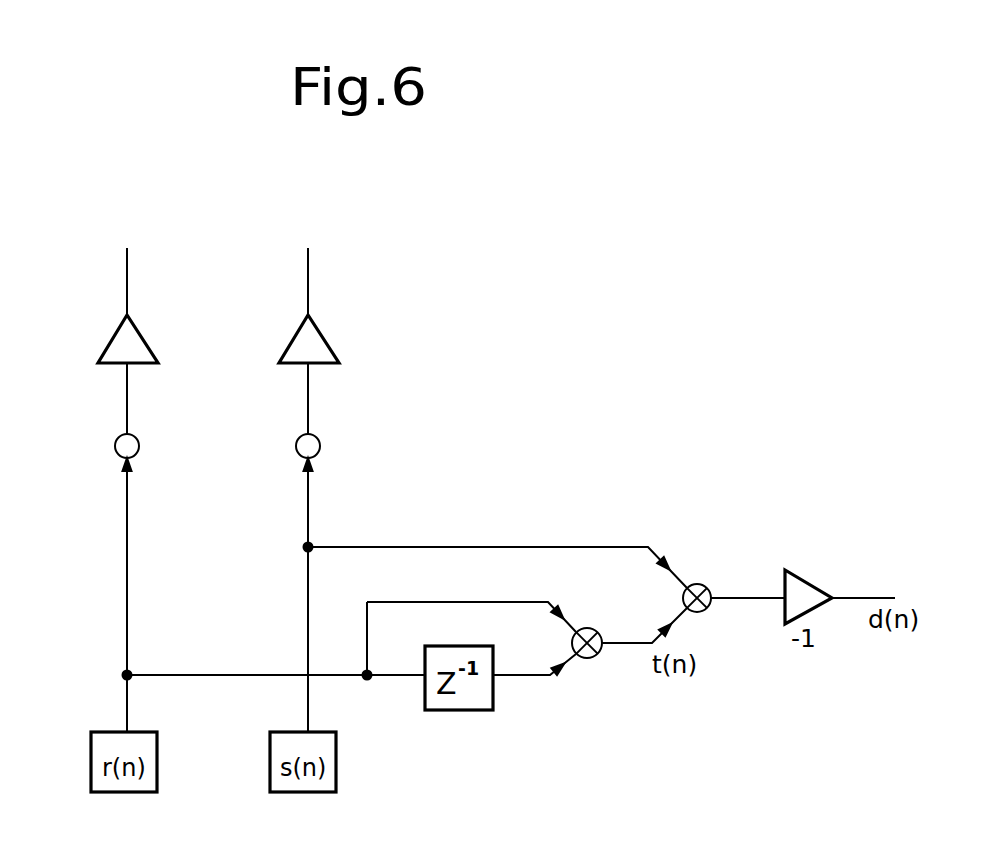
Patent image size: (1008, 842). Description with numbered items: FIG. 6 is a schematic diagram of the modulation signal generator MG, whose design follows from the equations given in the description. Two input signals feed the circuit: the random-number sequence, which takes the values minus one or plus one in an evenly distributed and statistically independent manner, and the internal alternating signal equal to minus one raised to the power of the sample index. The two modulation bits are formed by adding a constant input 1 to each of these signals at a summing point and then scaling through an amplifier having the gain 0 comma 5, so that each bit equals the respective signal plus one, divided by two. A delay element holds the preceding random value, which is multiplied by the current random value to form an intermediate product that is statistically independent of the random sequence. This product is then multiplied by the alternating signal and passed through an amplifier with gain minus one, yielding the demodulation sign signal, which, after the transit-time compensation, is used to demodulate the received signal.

The constant input value 1 is at (114, 446).
The output b0 with gain 0,5 amplifier 0 is at (141, 339).
The gain 0,5 amplifier of output b1 5 is at (322, 339).